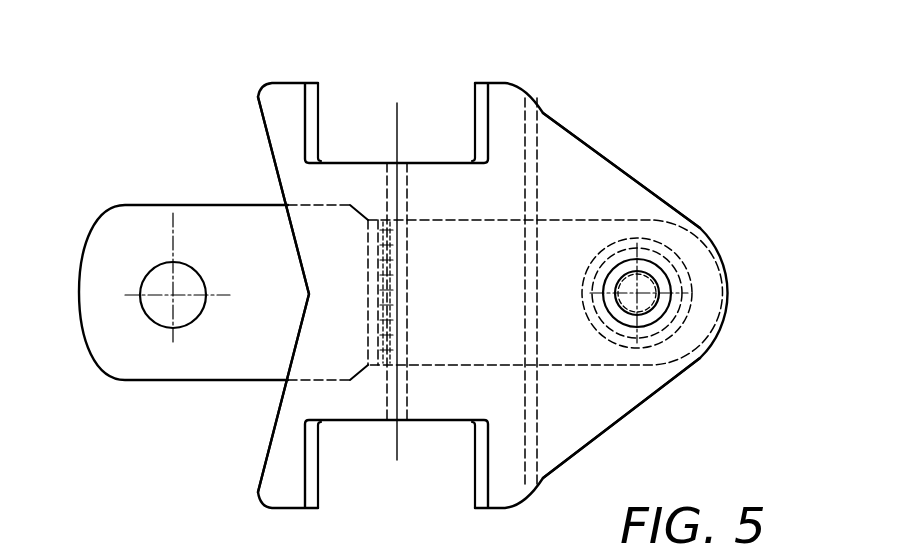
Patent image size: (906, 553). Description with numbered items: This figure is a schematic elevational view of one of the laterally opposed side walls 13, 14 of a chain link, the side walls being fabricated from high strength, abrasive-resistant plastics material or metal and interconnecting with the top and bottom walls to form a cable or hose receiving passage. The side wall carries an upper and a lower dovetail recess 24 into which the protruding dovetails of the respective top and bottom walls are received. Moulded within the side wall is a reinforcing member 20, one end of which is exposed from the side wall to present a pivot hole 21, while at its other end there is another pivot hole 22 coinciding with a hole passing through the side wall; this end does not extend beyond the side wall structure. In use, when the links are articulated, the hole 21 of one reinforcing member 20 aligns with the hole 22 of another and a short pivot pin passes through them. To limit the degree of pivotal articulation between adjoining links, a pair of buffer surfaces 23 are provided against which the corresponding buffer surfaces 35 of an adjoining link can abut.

The side wall 13 is at (527, 264).
The side wall 14 is at (647, 131).
The reinforcing member 20 is at (174, 205).
The pivot hole 21 is at (157, 310).
The pivot hole 22 is at (657, 278).
The buffer surfaces 23 is at (543, 112).
The dovetail recess 24 is at (320, 110).
The buffer surfaces 35 is at (258, 97).